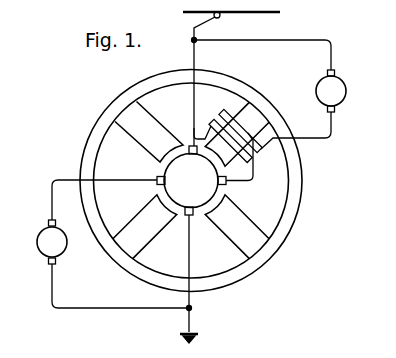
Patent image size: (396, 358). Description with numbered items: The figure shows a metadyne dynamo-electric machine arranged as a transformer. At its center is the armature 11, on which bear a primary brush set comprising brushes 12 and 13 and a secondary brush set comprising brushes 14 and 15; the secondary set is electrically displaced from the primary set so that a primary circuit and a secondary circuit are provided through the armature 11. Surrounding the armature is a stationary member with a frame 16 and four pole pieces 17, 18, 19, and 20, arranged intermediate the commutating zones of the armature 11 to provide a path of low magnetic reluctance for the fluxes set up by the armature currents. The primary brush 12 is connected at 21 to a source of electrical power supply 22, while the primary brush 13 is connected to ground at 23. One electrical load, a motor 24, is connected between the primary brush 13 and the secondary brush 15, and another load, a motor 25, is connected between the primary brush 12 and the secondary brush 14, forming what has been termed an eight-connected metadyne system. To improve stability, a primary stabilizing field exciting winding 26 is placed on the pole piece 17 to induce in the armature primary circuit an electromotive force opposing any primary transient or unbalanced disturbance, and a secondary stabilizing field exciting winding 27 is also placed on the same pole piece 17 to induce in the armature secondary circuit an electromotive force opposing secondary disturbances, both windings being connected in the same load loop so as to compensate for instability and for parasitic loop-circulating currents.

The armature 11 is at (218, 188).
The primary brush 12 is at (185, 144).
The primary brush 13 is at (195, 214).
The secondary brush 14 is at (228, 177).
The secondary brush 15 is at (159, 174).
The frame 16 is at (302, 198).
The pole piece 17 is at (227, 125).
The pole piece 18 is at (142, 215).
The pole piece 19 is at (242, 214).
The pole piece 20 is at (150, 118).
The connection 21 is at (213, 20).
The source of electrical power supply 22 is at (255, 14).
The ground 23 is at (193, 334).
The motor 24 is at (40, 241).
The motor 25 is at (344, 84).
The primary stabilizing field exciting winding 26 is at (217, 101).
The secondary stabilizing field exciting winding 27 is at (256, 142).